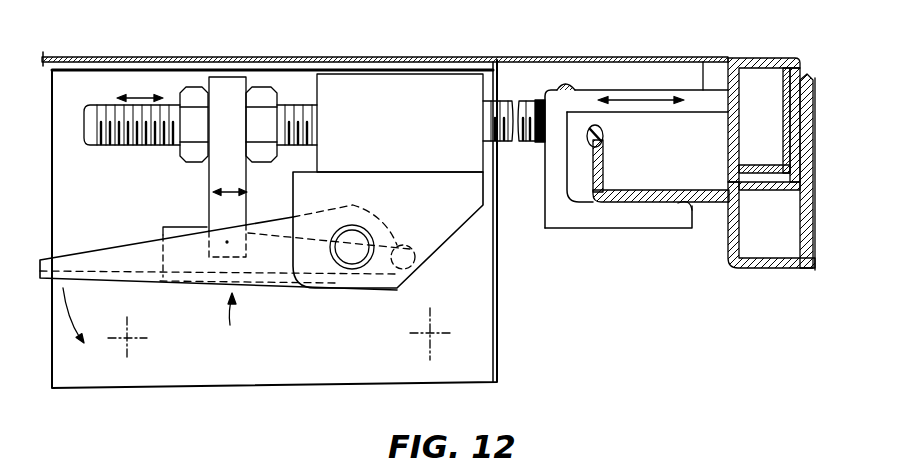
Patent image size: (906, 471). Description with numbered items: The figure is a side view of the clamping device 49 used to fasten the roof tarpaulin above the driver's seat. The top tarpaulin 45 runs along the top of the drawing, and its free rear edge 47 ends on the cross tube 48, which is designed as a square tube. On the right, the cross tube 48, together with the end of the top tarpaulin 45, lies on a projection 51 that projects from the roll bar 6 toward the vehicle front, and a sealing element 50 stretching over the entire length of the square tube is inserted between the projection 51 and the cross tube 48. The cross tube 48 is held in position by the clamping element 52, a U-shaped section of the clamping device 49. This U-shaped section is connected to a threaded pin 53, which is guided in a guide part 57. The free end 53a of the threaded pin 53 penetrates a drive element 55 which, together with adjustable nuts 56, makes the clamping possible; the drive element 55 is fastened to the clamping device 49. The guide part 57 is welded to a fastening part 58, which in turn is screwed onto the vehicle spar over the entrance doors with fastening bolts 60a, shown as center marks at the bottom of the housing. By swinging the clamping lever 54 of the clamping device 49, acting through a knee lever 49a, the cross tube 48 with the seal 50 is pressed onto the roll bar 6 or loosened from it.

The roll bar 6 is at (768, 247).
The top tarpaulin 45 is at (545, 56).
The free rear edge 47 is at (797, 105).
The cross tube 48 is at (743, 58).
The clamping device 49 is at (321, 265).
The knee lever 49a is at (350, 256).
The sealing element 50 is at (800, 60).
The projection 51 is at (650, 199).
The clamping element 52 is at (572, 217).
The threaded pin 53 is at (507, 141).
The free end of threaded pin 53a is at (108, 106).
The clamping lever 54 is at (52, 266).
The drive element 55 is at (227, 85).
The adjustable nuts 56 is at (190, 153).
The guide part 57 is at (373, 83).
The fastening part 58 is at (290, 363).
The fastening bolts 60a is at (130, 333).